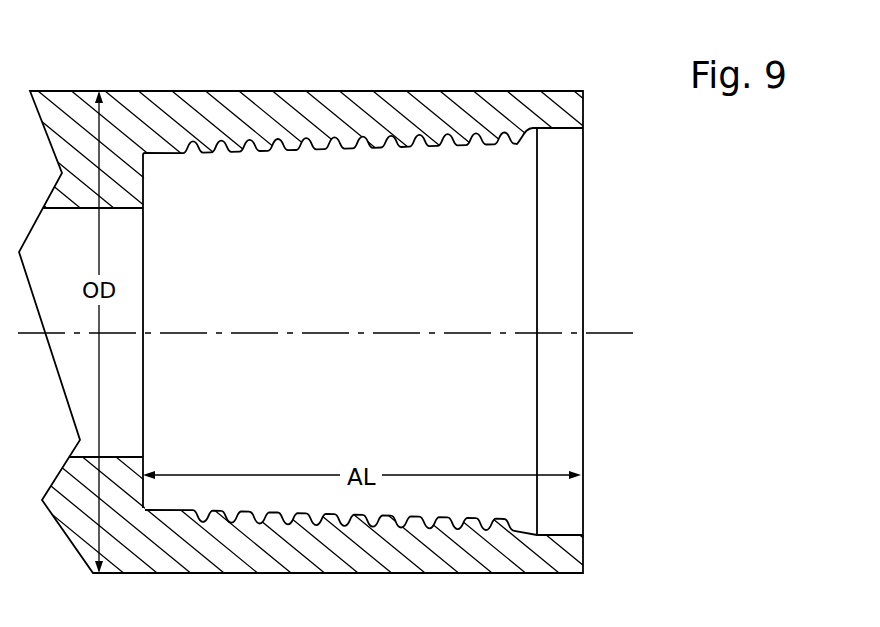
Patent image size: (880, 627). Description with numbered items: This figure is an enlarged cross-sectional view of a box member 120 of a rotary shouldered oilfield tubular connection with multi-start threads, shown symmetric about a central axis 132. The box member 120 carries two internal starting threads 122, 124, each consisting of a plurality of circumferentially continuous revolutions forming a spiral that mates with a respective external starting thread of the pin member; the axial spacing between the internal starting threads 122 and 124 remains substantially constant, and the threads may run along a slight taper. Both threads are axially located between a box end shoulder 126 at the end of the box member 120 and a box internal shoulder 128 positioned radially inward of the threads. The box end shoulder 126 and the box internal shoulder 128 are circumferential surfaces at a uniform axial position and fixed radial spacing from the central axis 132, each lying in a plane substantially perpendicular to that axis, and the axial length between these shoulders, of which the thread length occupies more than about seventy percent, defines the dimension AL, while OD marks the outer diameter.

The box member 120 is at (370, 62).
The internal starting thread 122 is at (480, 138).
The internal starting thread 124 is at (365, 139).
The box end shoulder 126 is at (585, 122).
The box internal shoulder 128 is at (148, 178).
The central axis 132 is at (317, 332).